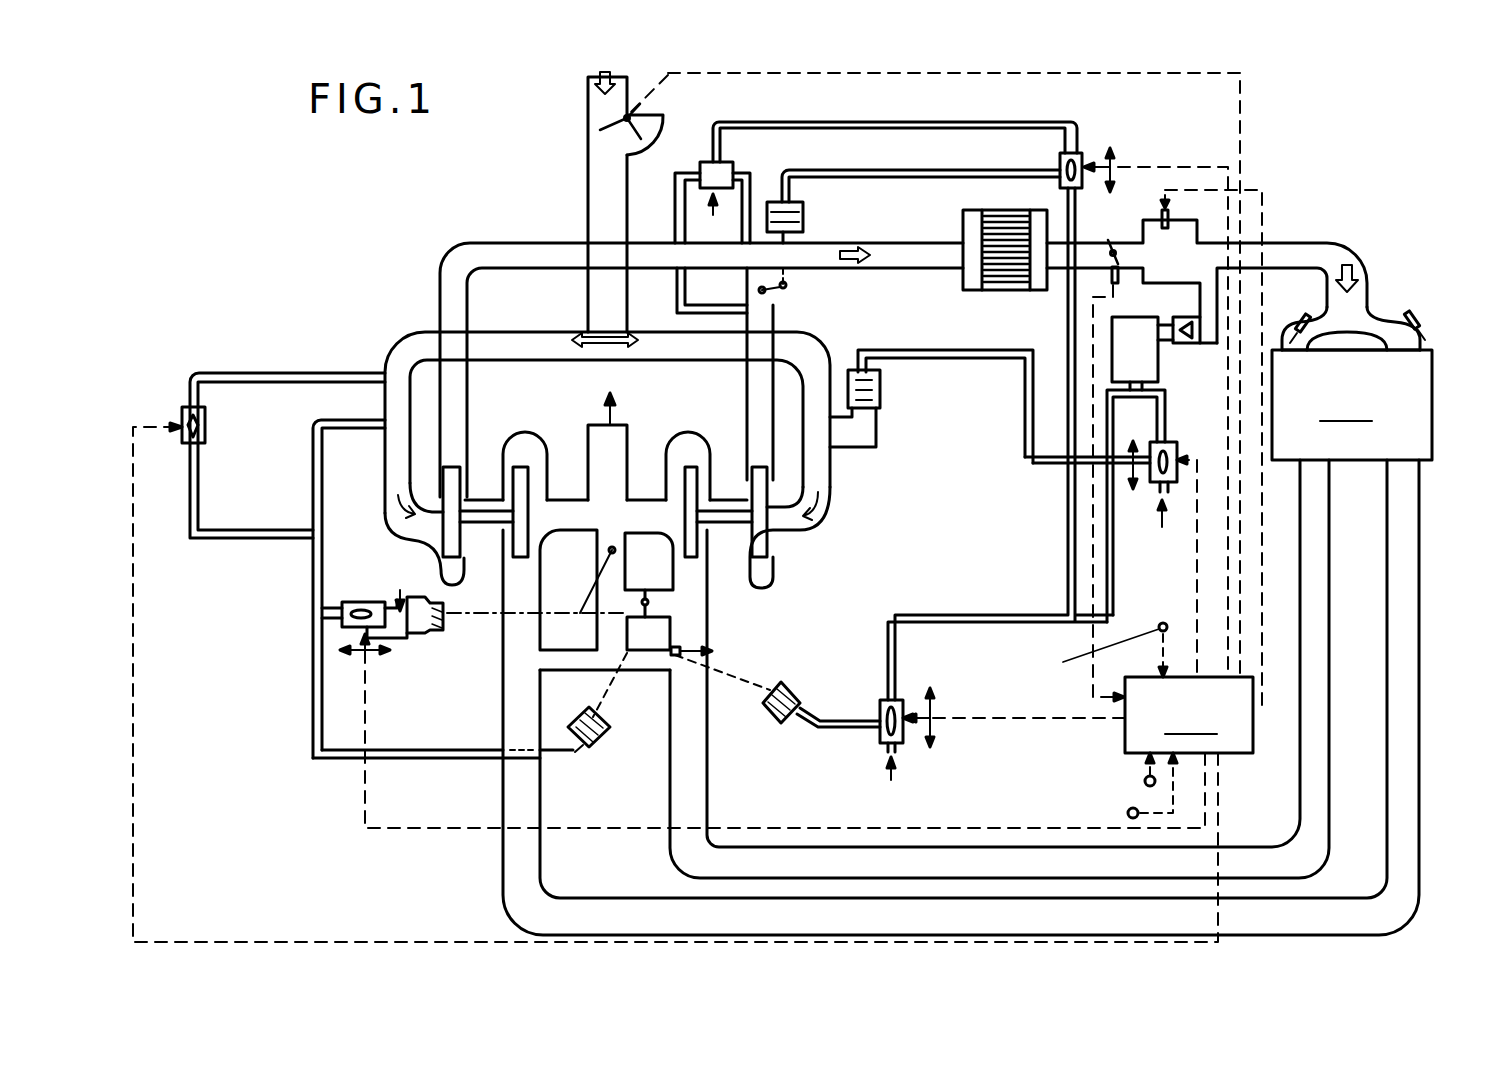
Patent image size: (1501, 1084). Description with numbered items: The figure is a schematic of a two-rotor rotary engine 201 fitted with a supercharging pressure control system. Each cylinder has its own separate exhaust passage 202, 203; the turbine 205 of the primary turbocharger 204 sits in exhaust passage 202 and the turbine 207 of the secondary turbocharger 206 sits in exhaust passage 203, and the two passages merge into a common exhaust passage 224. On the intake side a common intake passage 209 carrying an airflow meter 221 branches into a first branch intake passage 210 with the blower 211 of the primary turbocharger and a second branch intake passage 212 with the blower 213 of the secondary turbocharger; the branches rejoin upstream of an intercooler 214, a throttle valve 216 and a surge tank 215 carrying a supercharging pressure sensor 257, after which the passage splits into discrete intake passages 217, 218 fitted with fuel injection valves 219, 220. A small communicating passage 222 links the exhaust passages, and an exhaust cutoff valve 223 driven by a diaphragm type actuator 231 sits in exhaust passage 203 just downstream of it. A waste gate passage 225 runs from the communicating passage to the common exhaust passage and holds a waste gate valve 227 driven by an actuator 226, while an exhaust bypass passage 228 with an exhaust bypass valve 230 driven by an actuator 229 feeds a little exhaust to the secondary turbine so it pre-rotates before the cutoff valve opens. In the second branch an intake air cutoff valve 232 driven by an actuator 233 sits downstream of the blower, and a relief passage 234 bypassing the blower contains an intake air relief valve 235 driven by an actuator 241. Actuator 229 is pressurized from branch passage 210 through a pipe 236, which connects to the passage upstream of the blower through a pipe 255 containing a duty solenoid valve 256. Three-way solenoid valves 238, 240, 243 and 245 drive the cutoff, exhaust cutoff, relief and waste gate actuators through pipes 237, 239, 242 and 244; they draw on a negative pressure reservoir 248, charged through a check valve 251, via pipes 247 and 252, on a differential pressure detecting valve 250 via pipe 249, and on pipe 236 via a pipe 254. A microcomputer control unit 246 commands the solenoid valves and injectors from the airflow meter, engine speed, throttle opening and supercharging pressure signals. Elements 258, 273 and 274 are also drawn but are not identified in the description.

The two-rotor rotary engine 201 is at (1352, 405).
The exhaust passage 202 is at (1407, 648).
The exhaust passage 203 is at (1320, 587).
The primary turbocharger 204 is at (487, 445).
The turbine 205 is at (553, 423).
The secondary turbocharger 206 is at (727, 445).
The turbine 207 is at (702, 424).
The common intake passage 209 is at (602, 157).
The first branch intake passage 210 is at (383, 400).
The blower 211 is at (407, 550).
The second branch intake passage 212 is at (818, 360).
The blower 213 is at (773, 577).
The intercooler 214 is at (975, 293).
The surge tank 215 is at (1242, 148).
The throttle valve 216 is at (1115, 245).
The discrete intake passage 217 is at (1370, 323).
The discrete intake passage 218 is at (1327, 320).
The fuel injection valve 219 is at (1417, 317).
The fuel injection valve 220 is at (1313, 317).
The airflow meter 221 is at (618, 125).
The communicating passage 222 is at (643, 670).
The exhaust cutoff valve 223 is at (690, 653).
The common exhaust passage 224 is at (627, 425).
The waste gate passage 225 is at (437, 632).
The diaphragm type actuator 226 is at (435, 635).
The waste gate valve 227 is at (593, 547).
The exhaust bypass passage 228 is at (673, 590).
The diaphragm type actuator 229 is at (590, 748).
The exhaust bypass valve 230 is at (670, 625).
The diaphragm type actuator 231 is at (763, 722).
The intake air cutoff valve 232 is at (764, 290).
The diaphragm type actuator 233 is at (803, 215).
The relief passage 234 is at (878, 447).
The intake air relief valve 235 is at (880, 405).
The pipe 236 is at (313, 655).
The pipe 237 is at (960, 170).
The three-way solenoid valve 238 is at (1075, 153).
The pipe 239 is at (877, 727).
The three-way solenoid valve 240 is at (878, 745).
The actuator 241 is at (880, 378).
The pipe 242 is at (1047, 466).
The three-way solenoid valve 243 is at (1172, 443).
The pipe 244 is at (418, 640).
The three-way solenoid valve 245 is at (342, 612).
The control unit 246 is at (693, 682).
The pipe 247 is at (1066, 347).
The negative pressure reservoir 248 is at (1112, 335).
The pipe 249 is at (887, 122).
The differential pressure detecting valve 250 is at (715, 162).
The check valve 251 is at (1190, 343).
The pipe 252 is at (1040, 613).
The pipe 254 is at (340, 598).
The pipe 255 is at (187, 373).
The duty solenoid valve 256 is at (205, 430).
The supercharging pressure sensor 257 is at (1195, 222).
The valve 258 is at (1118, 280).
The relief valve chamber 273 is at (745, 175).
The passage 274 is at (675, 212).